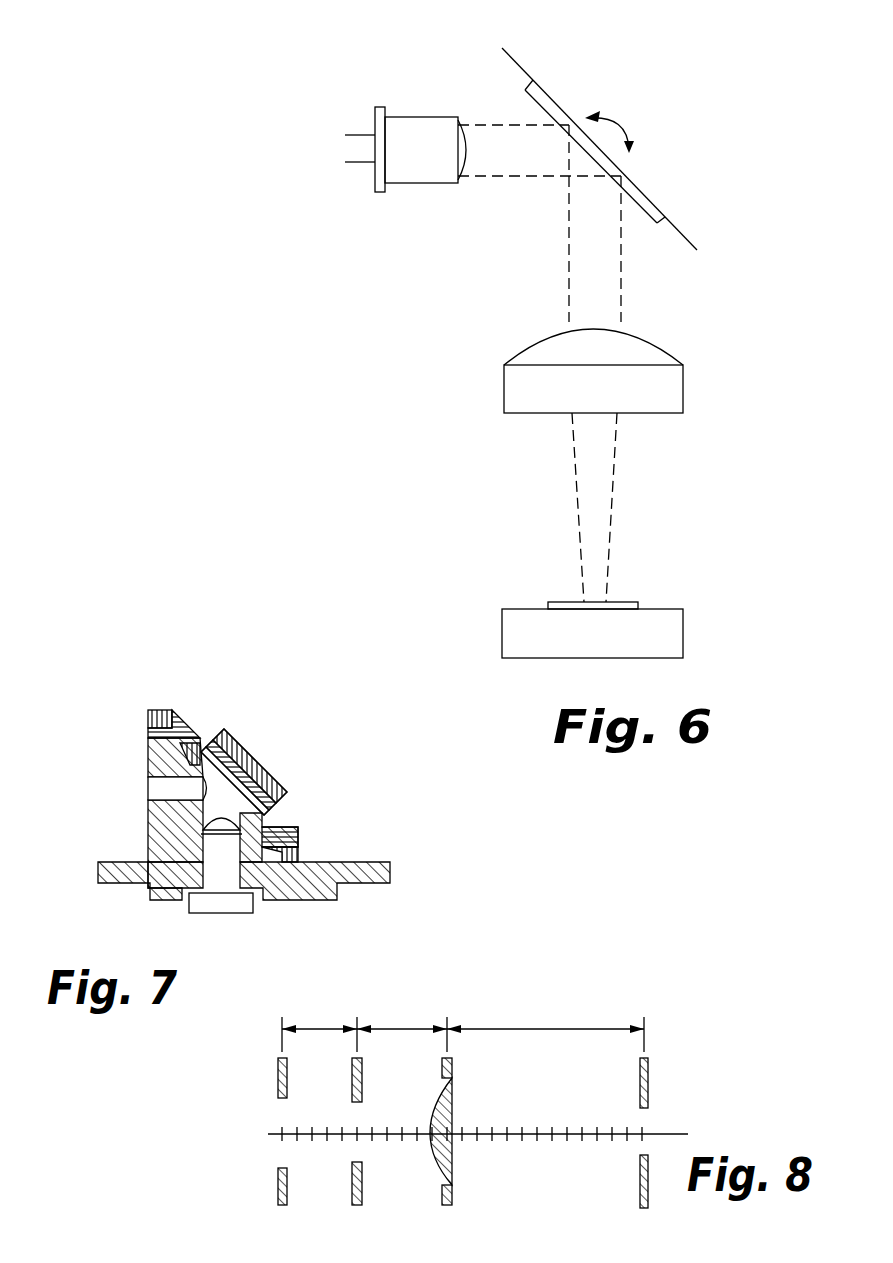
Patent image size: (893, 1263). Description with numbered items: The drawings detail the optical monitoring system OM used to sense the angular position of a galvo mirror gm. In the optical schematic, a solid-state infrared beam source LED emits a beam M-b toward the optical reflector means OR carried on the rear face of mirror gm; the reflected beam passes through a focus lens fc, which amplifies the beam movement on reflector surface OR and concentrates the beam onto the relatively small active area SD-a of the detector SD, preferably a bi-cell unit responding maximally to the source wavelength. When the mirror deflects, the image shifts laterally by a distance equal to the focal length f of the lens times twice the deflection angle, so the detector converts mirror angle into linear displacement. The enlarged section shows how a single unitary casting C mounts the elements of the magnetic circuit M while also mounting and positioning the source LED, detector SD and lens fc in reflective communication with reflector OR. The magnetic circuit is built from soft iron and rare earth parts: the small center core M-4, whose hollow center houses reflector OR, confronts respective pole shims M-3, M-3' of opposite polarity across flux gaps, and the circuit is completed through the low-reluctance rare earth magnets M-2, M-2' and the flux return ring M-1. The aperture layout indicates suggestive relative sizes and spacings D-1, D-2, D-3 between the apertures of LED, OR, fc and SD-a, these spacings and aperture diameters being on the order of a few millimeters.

In FIG. 6, the solid-state beam source LED is at (405, 149).
In FIG. 7, the solid-state beam source LED is at (148, 788).
In FIG. 8, the solid-state beam source LED is at (272, 1150).
In FIG. 6, the optical reflector means OR is at (517, 90).
In FIG. 7, the optical reflector means OR is at (208, 798).
In FIG. 8, the optical reflector means OR is at (360, 1150).
In FIG. 6, the focal length of the lens f is at (620, 129).
In FIG. 6, the beam M-b is at (569, 273).
In FIG. 8, the beam M-b is at (478, 1112).
In FIG. 6, the optical monitoring system OM is at (388, 298).
In FIG. 6, the focus lens fc is at (685, 397).
In FIG. 7, the focus lens fc is at (224, 834).
In FIG. 8, the focus lens fc is at (443, 1151).
In FIG. 6, the active area of detector SD-a is at (632, 602).
In FIG. 8, the active area of detector SD-a is at (653, 1150).
In FIG. 6, the detector SD is at (683, 637).
In FIG. 7, the detector SD is at (210, 913).
In FIG. 7, the magnetic circuit M is at (128, 708).
In FIG. 7, the flux return circuit ring M-1 is at (148, 708).
In FIG. 7, the rare earth magnet M-2 is at (306, 793).
In FIG. 7, the pole shim M-3 is at (306, 766).
In FIG. 7, the core M-4 is at (222, 730).
In FIG. 7, the rare earth magnet M-2' is at (212, 646).
In FIG. 7, the pole shim M-3' is at (219, 729).
In FIG. 7, the mirror gm is at (252, 752).
In FIG. 7, the unitary casting C is at (390, 877).
In FIG. 8, the distance LED to reflector D-1 is at (319, 1021).
In FIG. 8, the distance reflector to lens D-2 is at (402, 1021).
In FIG. 8, the distance lens to detector D-3 is at (545, 1021).